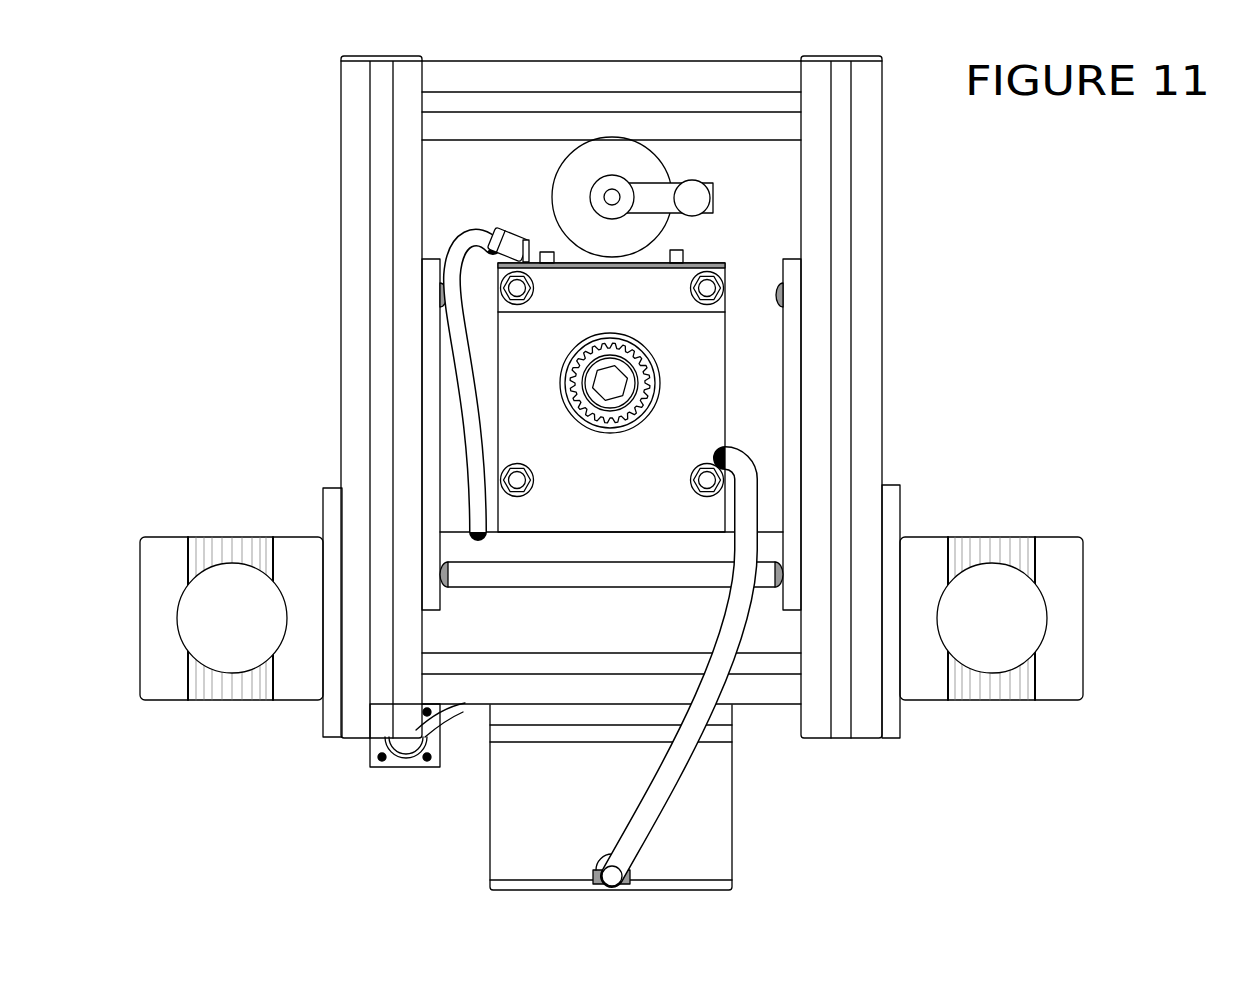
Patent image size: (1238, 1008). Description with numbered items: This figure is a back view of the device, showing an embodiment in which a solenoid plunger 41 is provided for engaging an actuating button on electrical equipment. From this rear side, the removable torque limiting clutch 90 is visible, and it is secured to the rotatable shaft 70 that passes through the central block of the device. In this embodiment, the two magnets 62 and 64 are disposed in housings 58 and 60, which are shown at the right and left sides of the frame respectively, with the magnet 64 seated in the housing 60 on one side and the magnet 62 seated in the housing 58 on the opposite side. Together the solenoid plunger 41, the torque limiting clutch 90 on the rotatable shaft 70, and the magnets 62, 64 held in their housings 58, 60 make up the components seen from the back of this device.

The solenoid plunger 41 is at (652, 193).
The removable torque limiting clutch 90 is at (626, 350).
The rotatable shaft 70 is at (613, 402).
The housing 60 is at (205, 589).
The magnet 64 is at (193, 632).
The housing 58 is at (1019, 589).
The magnet 62 is at (1030, 632).